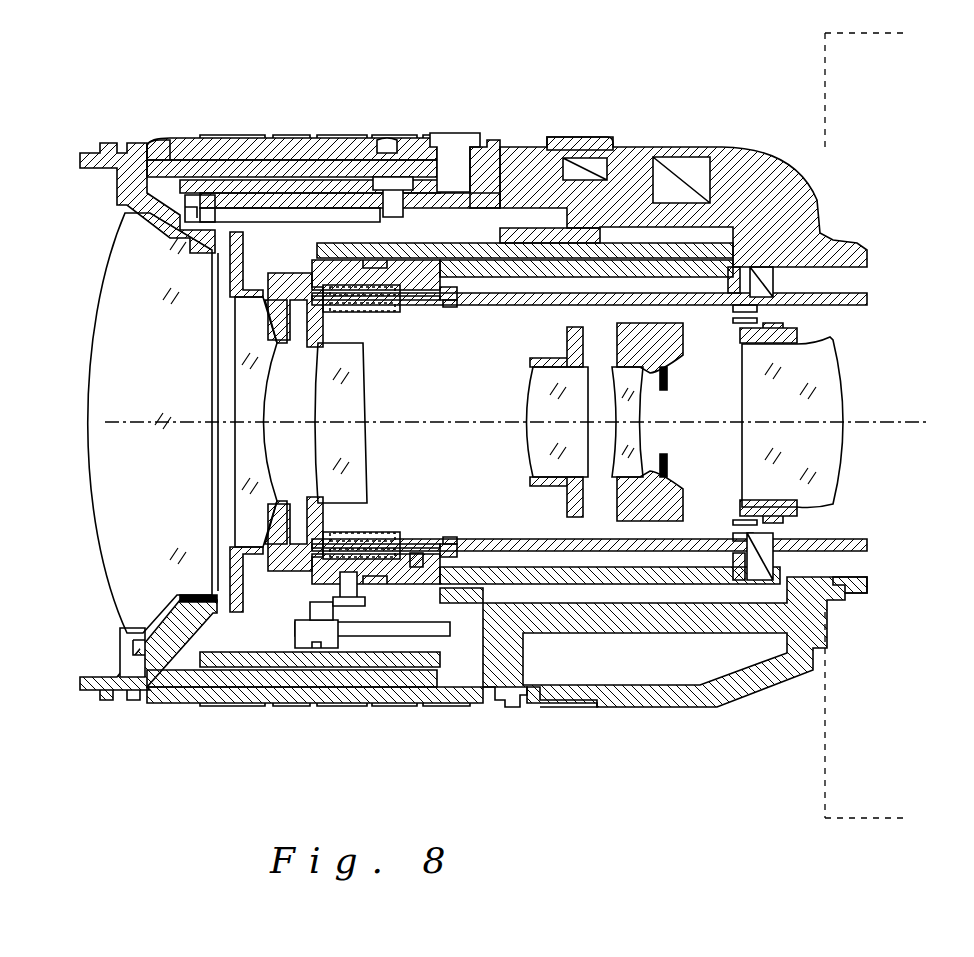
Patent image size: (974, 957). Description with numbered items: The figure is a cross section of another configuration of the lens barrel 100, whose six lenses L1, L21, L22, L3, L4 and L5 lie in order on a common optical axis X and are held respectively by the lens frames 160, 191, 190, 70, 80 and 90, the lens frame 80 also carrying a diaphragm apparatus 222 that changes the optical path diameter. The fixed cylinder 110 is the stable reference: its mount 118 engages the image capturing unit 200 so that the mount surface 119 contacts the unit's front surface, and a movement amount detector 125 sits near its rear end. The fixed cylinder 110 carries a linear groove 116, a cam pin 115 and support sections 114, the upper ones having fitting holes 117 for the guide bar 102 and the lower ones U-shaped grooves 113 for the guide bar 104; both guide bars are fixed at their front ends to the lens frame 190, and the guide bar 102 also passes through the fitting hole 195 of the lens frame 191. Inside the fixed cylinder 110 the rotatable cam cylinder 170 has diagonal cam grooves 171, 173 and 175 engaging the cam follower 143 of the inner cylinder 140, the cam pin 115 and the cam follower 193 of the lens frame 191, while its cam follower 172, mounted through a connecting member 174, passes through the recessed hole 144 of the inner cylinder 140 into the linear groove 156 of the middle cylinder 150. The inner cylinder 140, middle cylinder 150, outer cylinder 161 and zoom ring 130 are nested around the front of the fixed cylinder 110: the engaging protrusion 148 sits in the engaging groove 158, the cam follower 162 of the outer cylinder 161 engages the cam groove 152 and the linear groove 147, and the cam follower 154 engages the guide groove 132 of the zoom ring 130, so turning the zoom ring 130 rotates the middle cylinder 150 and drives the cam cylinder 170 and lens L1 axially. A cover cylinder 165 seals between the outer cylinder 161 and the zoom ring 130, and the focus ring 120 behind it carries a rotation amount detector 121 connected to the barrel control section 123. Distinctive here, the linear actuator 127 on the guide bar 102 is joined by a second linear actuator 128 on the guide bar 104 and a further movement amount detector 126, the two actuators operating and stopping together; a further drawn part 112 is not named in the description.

The lens barrel 100 is at (75, 65).
The image capturing unit 200 is at (822, 48).
The optical axis X is at (907, 420).
The guide bar 102 is at (868, 299).
The guide bar 104 is at (868, 548).
The fixed cylinder 110 is at (682, 150).
The inner fixed barrel 112 is at (586, 268).
The U-shaped groove 113 is at (445, 543).
The support section 114 is at (457, 300).
The cam pin 115 is at (470, 275).
The linear groove 116 is at (728, 310).
The fitting hole 117 is at (447, 305).
The mount 118 is at (845, 592).
The mount surface 119 is at (833, 615).
The focus ring 120 is at (577, 137).
The rotation amount detector 121 is at (622, 157).
The barrel control section 123 is at (700, 157).
The movement amount detector 125 is at (775, 282).
The movement amount detector 126 is at (790, 538).
The linear actuator 127 is at (385, 300).
The linear actuator 128 is at (360, 537).
The zoom ring 130 is at (455, 133).
The guide groove 132 is at (392, 140).
The inner cylinder 140 is at (200, 165).
The cam follower 143 is at (640, 605).
The recessed hole 144 is at (462, 650).
The linear groove 147 is at (262, 195).
The engaging protrusion 148 is at (205, 228).
The middle cylinder 150 is at (282, 150).
The cam groove 152 is at (345, 165).
The cam follower 154 is at (497, 165).
The linear groove 156 is at (445, 650).
The engaging groove 158 is at (187, 207).
The lens frame 160 is at (140, 630).
The outer cylinder 161 is at (168, 140).
The cam follower 162 is at (427, 187).
The cover cylinder 165 is at (150, 140).
The cam cylinder 170 is at (515, 243).
The cam groove 171 is at (680, 605).
The cam follower 172 is at (350, 608).
The cam groove 173 is at (540, 258).
The connecting member 174 is at (300, 650).
The cam groove 175 is at (365, 300).
The lens frame 190 is at (345, 533).
The lens frame 191 is at (268, 505).
The cam follower 193 is at (355, 292).
The fitting hole 195 is at (395, 310).
The diaphragm apparatus 222 is at (668, 378).
The lens frame 70 is at (548, 372).
The lens frame 80 is at (648, 398).
The lens frame 90 is at (812, 345).
The lens L1 is at (103, 455).
The lens L21 is at (256, 455).
The lens L22 is at (360, 455).
The lens L3 is at (530, 455).
The lens L4 is at (650, 455).
The lens L5 is at (838, 455).